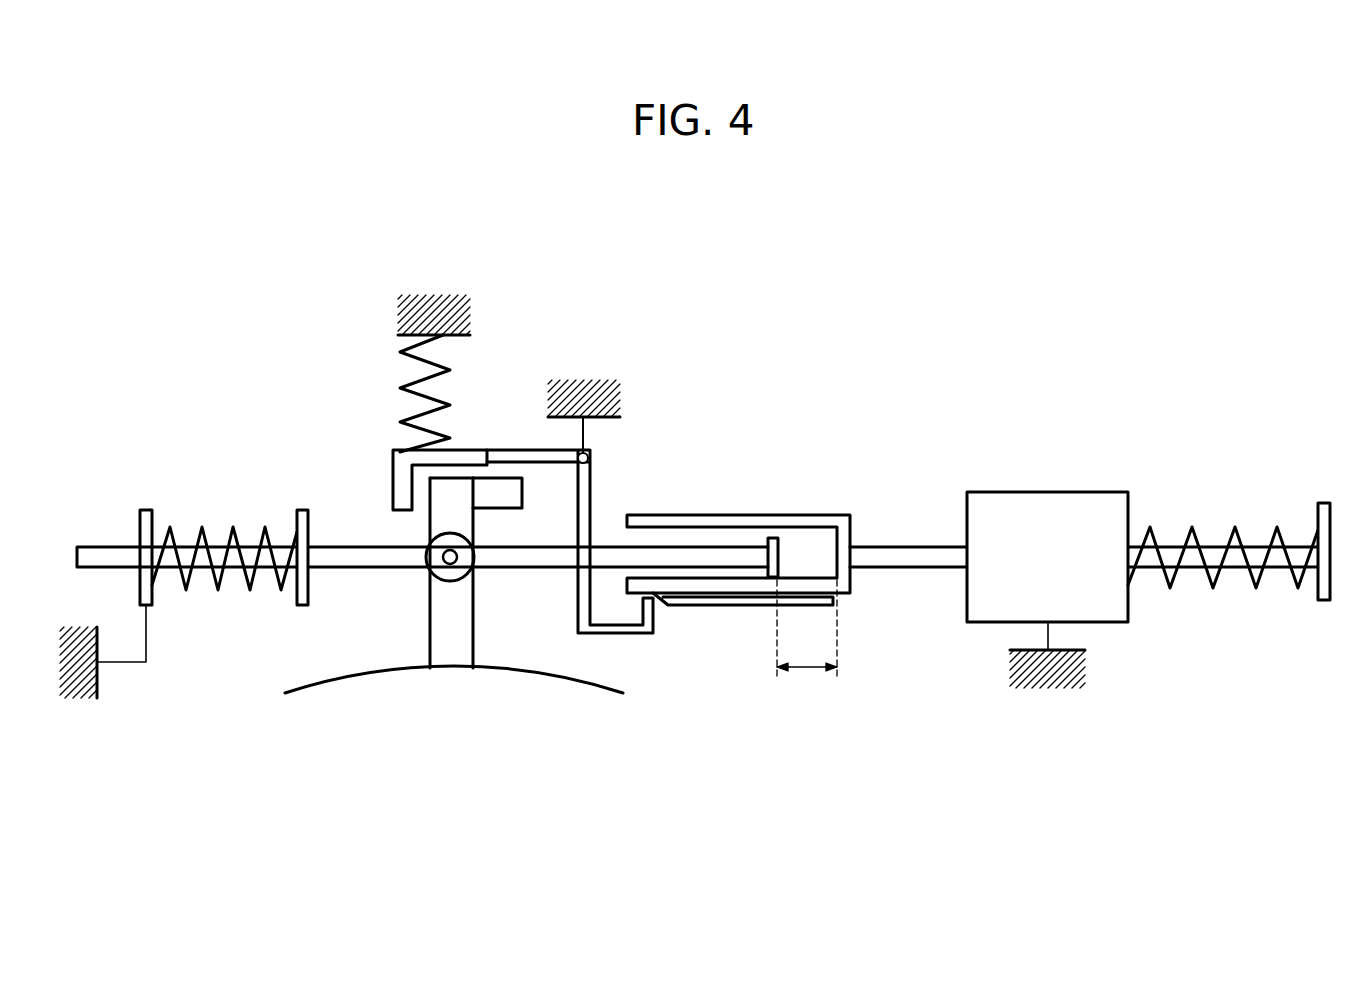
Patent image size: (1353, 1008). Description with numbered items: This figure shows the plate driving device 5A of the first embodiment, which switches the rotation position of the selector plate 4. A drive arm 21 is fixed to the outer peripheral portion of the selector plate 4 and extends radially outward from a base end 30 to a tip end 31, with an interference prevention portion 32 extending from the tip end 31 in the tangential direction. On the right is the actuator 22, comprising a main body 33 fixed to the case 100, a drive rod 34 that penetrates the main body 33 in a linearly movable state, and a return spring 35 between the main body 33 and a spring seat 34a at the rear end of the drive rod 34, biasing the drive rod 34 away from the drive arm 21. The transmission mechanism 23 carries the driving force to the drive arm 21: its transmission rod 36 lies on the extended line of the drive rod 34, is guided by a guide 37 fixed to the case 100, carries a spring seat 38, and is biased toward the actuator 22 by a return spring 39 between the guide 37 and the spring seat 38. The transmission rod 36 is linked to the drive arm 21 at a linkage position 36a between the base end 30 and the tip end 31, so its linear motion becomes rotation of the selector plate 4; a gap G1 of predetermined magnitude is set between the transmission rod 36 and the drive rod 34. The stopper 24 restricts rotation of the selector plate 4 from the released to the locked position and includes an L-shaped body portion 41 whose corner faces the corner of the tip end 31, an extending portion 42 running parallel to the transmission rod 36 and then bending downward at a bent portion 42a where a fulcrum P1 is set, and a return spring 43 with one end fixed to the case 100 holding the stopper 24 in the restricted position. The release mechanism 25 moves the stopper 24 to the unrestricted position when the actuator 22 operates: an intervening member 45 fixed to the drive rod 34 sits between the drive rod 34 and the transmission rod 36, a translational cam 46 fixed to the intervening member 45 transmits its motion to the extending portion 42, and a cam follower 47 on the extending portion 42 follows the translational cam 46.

The plate driving device 5A is at (733, 257).
The case 100 is at (466, 335).
The guide 37 is at (140, 520).
The transmission rod 36 is at (370, 532).
The return spring 39 is at (213, 590).
The spring seat 38 is at (302, 508).
The stopper 24 is at (375, 410).
The return spring 43 is at (415, 380).
The body portion 41 is at (395, 455).
The tip end 31 is at (452, 485).
The interference prevention portion 32 is at (498, 482).
The drive arm 21 is at (443, 613).
The base end 30 is at (447, 664).
The linkage position 36a is at (440, 573).
The selector plate 4 is at (493, 676).
The transmission mechanism 23 is at (595, 546).
The extending portion 42 is at (551, 460).
The bent portion 42a is at (590, 456).
The fulcrum P1 is at (590, 463).
The release mechanism 25 is at (738, 605).
The intervening member 45 is at (785, 514).
The translational cam 46 is at (703, 606).
The cam follower 47 is at (657, 610).
The gap G1 is at (807, 630).
The actuator 22 is at (1101, 499).
The drive rod 34 is at (900, 552).
The main body 33 is at (1024, 502).
The return spring 35 is at (1190, 527).
The spring seat 34a is at (1325, 510).